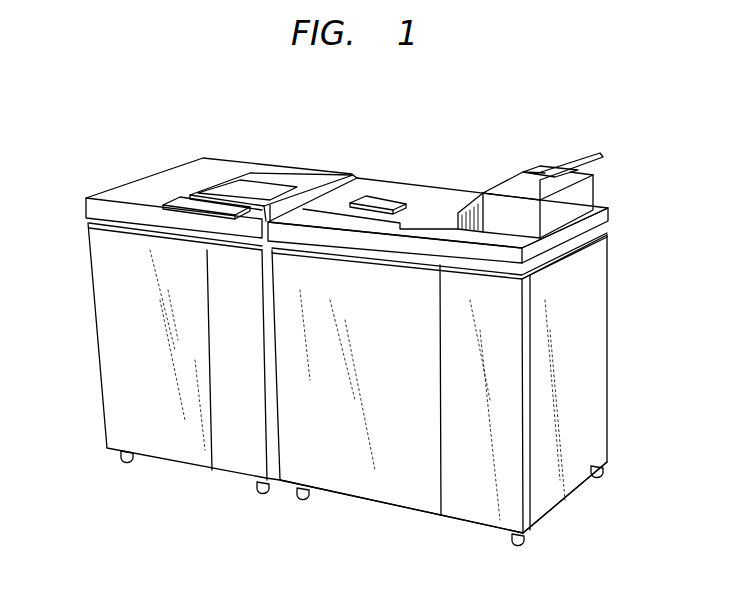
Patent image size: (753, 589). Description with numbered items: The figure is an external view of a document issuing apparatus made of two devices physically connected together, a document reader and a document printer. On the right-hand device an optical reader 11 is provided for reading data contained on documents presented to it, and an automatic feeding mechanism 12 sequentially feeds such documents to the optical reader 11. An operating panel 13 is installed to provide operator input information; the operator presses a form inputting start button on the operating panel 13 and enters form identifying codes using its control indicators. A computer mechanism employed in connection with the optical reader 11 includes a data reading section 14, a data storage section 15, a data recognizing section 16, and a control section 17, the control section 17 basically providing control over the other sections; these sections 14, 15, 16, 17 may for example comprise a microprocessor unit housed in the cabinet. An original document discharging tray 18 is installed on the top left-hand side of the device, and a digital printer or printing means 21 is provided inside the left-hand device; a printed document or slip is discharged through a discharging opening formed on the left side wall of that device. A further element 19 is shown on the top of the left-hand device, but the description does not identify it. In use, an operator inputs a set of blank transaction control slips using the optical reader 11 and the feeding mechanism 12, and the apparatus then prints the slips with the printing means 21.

The optical reader 11 is at (438, 183).
The feeding mechanism 12 is at (556, 190).
The operating panel 13 is at (491, 240).
The data reading section 14 is at (357, 470).
The data storage section 15 is at (360, 497).
The data recognizing section 16 is at (482, 524).
The control section 17 is at (564, 384).
The original document discharging tray 18 is at (313, 188).
The control plate 19 is at (183, 200).
The digital printer 21 is at (113, 342).